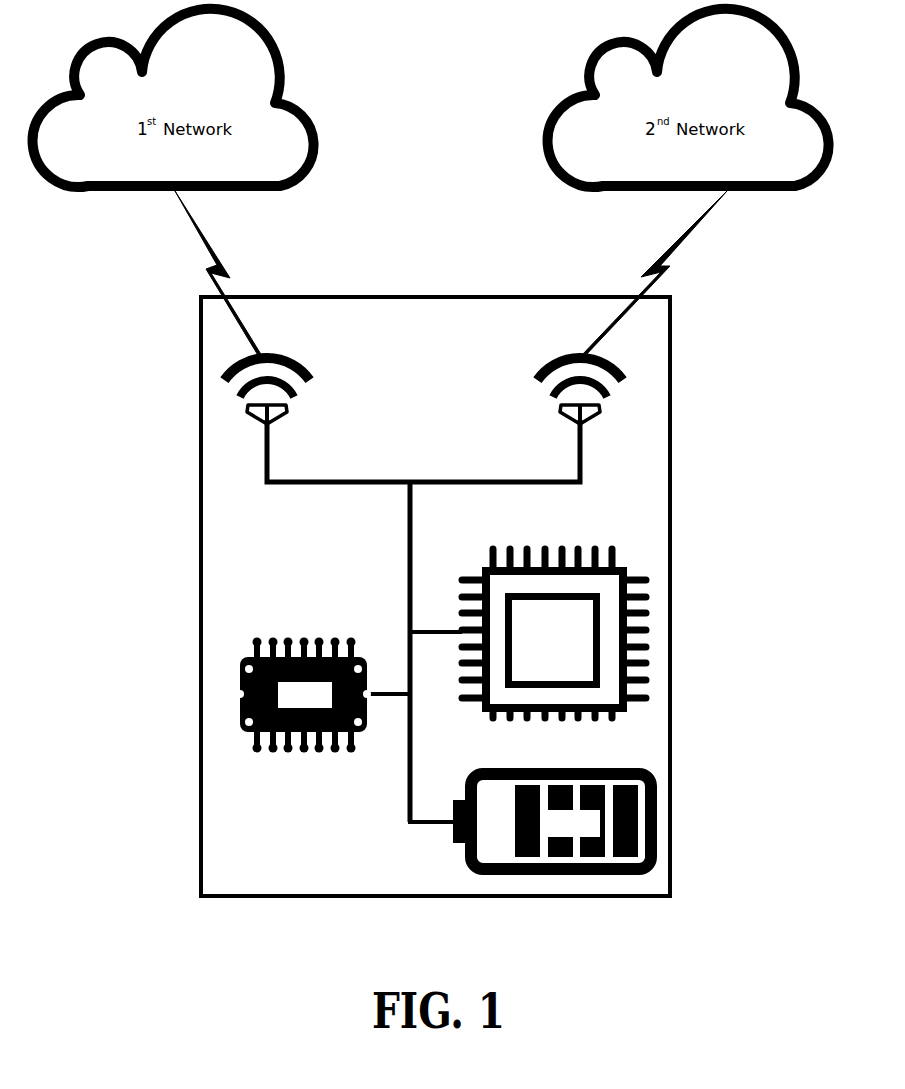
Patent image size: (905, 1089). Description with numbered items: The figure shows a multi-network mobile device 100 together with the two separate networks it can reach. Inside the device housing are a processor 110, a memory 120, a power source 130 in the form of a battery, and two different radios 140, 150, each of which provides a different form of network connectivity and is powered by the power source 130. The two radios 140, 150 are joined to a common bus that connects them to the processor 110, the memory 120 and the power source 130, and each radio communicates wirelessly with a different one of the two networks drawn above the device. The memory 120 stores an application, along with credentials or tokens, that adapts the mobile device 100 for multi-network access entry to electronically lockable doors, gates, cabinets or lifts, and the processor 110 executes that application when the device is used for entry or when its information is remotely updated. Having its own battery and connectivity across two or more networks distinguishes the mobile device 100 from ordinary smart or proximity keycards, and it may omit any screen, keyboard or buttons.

The multi-network mobile device 100 is at (199, 515).
The processor 110 is at (568, 650).
The memory 120 is at (321, 706).
The power source 130 is at (590, 834).
The radio 140 is at (295, 362).
The radio 150 is at (548, 367).